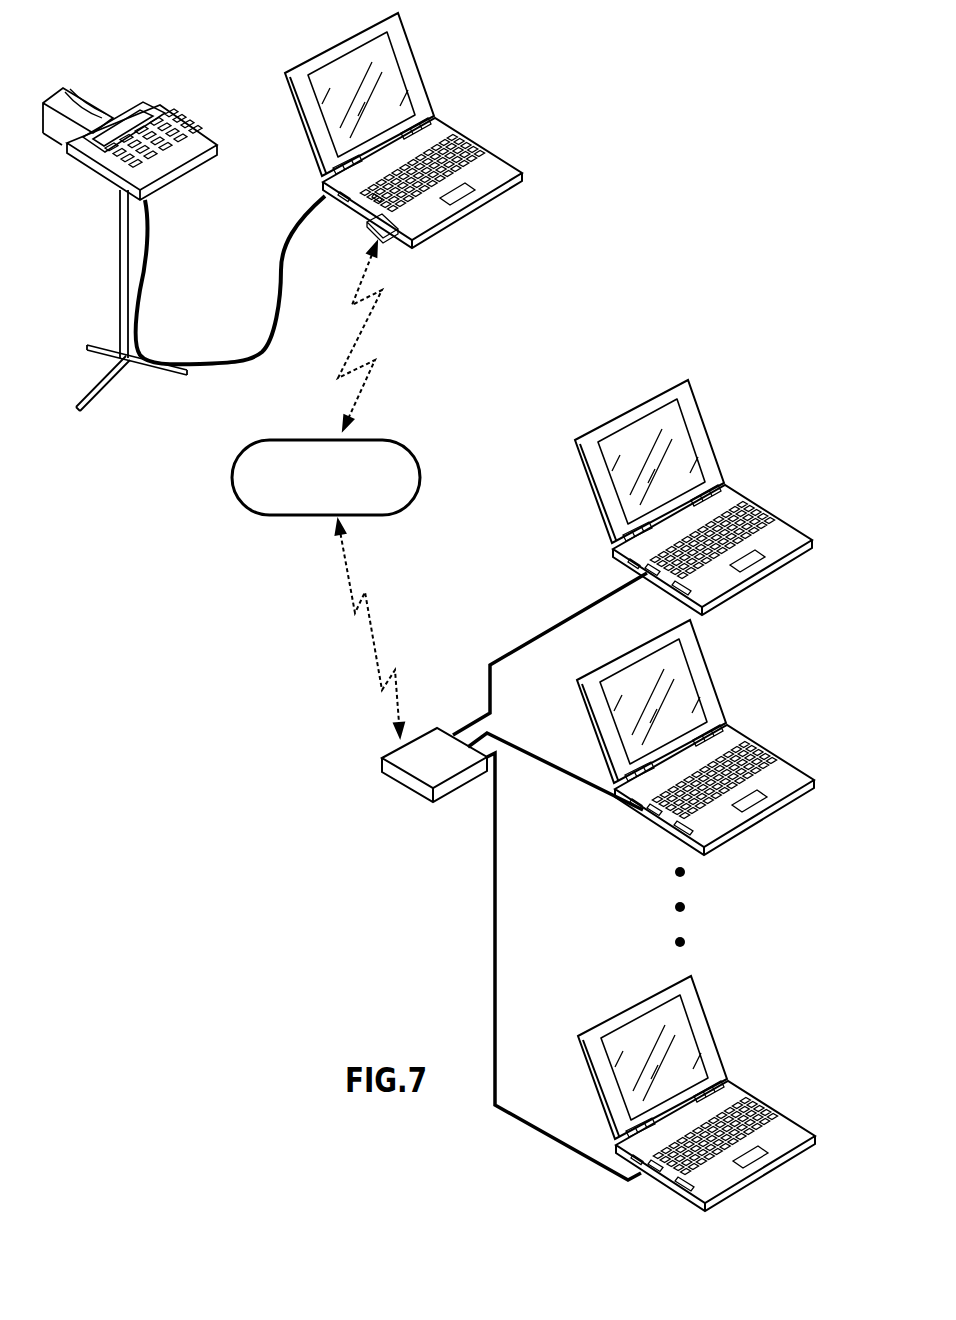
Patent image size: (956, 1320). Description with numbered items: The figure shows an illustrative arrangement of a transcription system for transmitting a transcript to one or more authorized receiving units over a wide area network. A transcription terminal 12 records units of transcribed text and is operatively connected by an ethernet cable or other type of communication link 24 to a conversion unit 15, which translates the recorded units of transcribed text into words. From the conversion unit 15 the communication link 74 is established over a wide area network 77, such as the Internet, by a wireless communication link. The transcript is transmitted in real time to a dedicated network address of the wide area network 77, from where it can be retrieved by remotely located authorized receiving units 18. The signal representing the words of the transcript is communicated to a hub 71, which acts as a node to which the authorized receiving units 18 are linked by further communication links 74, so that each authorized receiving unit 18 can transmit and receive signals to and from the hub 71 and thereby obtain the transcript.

The transcription terminal 12 is at (194, 136).
The conversion unit 15 is at (297, 120).
The authorized receiving unit 18 is at (773, 572).
The communication link 24 is at (253, 358).
The network hub 71 is at (427, 768).
The communication link 74 is at (553, 627).
The wide area network 77 is at (403, 446).